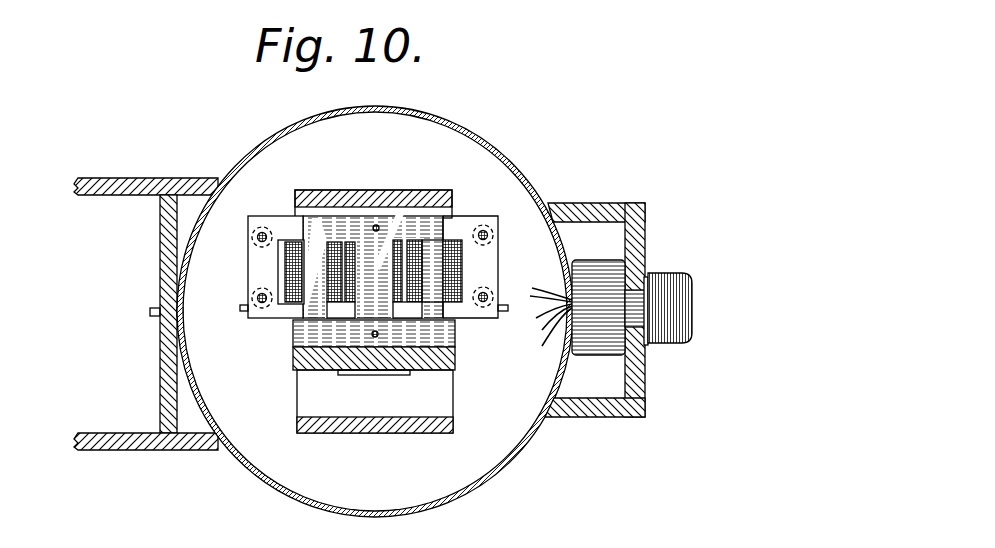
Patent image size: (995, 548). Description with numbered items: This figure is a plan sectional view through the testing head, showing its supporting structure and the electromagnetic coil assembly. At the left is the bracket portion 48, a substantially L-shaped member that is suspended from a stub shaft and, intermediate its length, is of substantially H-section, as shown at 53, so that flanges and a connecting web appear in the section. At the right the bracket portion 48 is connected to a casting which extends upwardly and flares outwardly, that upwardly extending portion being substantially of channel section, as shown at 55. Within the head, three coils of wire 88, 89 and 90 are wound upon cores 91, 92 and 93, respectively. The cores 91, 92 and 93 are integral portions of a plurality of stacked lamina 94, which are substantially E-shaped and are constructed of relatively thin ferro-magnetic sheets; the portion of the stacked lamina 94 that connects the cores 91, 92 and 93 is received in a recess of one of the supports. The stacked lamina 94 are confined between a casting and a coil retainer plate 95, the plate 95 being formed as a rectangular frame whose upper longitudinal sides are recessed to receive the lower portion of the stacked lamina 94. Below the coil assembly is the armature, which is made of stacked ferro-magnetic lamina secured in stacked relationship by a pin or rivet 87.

The bracket portion 48 is at (154, 271).
The H-section of bracket portion 53 is at (160, 373).
The channel section of casting 55 is at (644, 238).
The pin or rivet 87 is at (373, 338).
The coil of wire 88 is at (297, 302).
The coil of wire 89 is at (402, 283).
The coil of wire 90 is at (452, 284).
The core 91 is at (290, 262).
The core 92 is at (384, 258).
The core 93 is at (437, 256).
The stacked lamina 94 is at (418, 218).
The coil retainer plate 95 is at (490, 262).